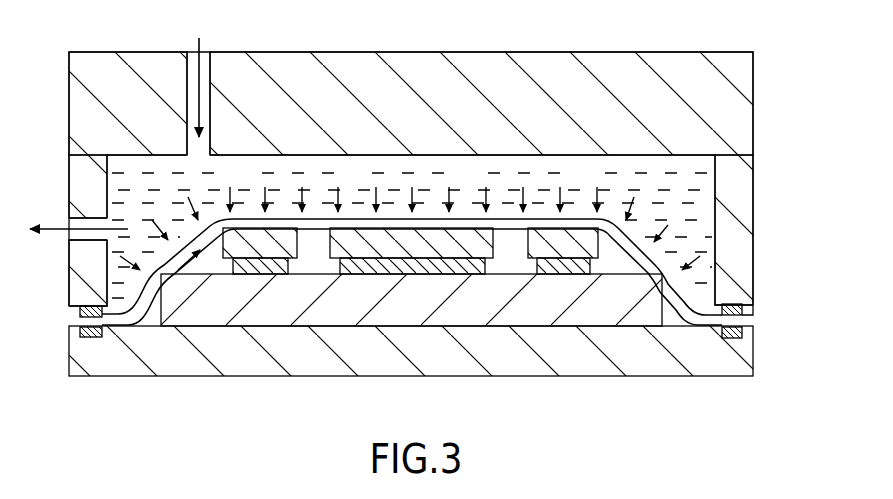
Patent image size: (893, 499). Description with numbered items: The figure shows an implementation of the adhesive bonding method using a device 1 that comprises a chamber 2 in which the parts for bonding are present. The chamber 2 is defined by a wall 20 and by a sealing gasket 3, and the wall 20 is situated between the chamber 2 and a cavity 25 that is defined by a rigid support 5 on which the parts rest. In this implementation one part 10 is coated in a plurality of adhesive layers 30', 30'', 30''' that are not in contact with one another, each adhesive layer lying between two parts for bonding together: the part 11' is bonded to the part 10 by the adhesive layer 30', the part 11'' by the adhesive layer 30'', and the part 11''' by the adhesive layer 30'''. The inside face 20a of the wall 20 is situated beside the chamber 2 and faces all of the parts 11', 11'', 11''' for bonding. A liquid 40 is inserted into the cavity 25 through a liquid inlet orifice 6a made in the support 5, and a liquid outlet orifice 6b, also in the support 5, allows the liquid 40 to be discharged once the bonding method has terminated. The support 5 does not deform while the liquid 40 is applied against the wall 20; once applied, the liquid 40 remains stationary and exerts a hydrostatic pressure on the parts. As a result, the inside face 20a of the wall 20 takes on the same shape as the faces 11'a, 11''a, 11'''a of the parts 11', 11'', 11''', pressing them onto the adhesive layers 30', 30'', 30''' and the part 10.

The device 1 is at (165, 142).
The chamber 2 is at (150, 312).
The sealing gasket 3 is at (80, 333).
The support 5 is at (446, 360).
The liquid inlet orifice 6a is at (206, 56).
The liquid outlet orifice 6b is at (76, 235).
The part 10 is at (549, 308).
The part 11' is at (260, 209).
The part 11'' is at (411, 209).
The part 11''' is at (565, 209).
The face of the part 11'a is at (284, 281).
The face of the part 11''a is at (435, 281).
The face of the part 11'''a is at (578, 281).
The wall 20 is at (356, 219).
The inside face of the wall 20a is at (208, 240).
The cavity 25 is at (118, 184).
The adhesive layer 30' is at (258, 279).
The adhesive layer 30'' is at (412, 279).
The adhesive layer 30''' is at (540, 279).
The liquid 40 is at (133, 170).